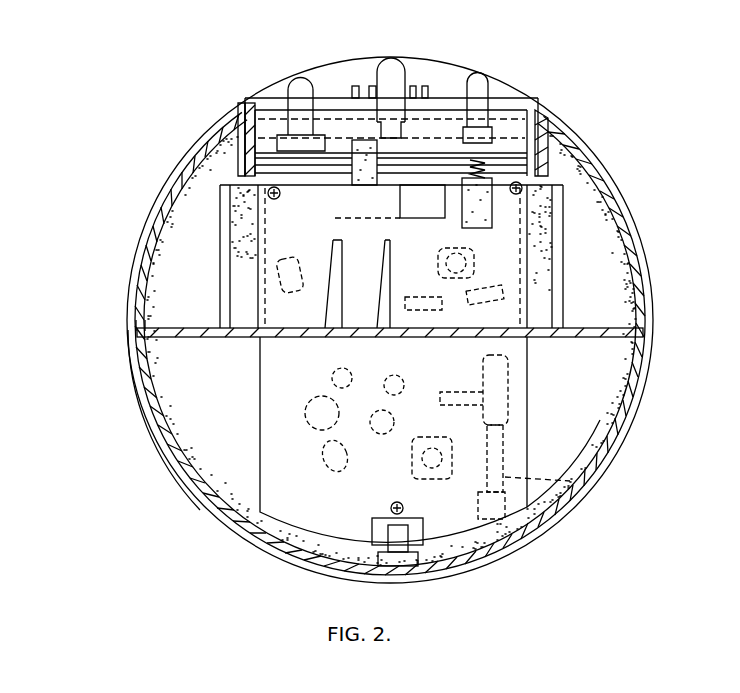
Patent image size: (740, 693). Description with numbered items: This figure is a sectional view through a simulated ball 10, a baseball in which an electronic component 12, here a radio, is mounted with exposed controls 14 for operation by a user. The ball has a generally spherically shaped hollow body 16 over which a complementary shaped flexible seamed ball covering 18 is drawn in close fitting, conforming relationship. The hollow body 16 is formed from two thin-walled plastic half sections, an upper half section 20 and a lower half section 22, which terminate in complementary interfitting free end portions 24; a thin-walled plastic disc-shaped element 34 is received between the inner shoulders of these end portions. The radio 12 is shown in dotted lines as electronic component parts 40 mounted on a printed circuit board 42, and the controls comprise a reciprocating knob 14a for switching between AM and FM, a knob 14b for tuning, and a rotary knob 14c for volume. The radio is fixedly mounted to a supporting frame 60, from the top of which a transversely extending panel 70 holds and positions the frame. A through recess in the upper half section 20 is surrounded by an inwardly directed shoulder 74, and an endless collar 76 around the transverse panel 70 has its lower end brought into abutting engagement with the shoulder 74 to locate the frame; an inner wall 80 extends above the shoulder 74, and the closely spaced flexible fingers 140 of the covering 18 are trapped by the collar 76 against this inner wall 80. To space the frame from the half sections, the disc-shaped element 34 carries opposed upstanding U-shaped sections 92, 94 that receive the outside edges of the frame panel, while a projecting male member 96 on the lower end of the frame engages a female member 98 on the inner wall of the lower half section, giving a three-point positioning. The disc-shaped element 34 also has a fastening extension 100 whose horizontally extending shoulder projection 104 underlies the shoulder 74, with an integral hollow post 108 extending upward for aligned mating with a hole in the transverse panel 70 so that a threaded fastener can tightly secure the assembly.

The simulated ball 10 is at (601, 133).
The electronic component 12 is at (450, 416).
The exposed controls 14 is at (480, 74).
The reciprocating electronic control knob 14a is at (488, 88).
The electronic control knob 14b is at (392, 59).
The rotary electronic control knob 14c is at (298, 89).
The hollow body 16 is at (624, 192).
The flexible seamed ball covering 18 is at (634, 216).
The upper thin-walled plastic half section 20 is at (152, 225).
The lower thin-walled plastic half section 22 is at (153, 432).
The complementary interfitting free end portions 24 is at (123, 342).
The disc-shaped element 34 is at (200, 342).
The electronic component parts 40 is at (572, 481).
The printed circuit board 42 is at (530, 498).
The supporting frame 60 is at (258, 477).
The transversely extending panel 70 is at (265, 93).
The shoulder 74 is at (247, 207).
The endless collar 76 is at (250, 150).
The inner wall 80 is at (236, 110).
The U-shaped section 92 is at (542, 300).
The U-shaped section 94 is at (242, 277).
The projecting male member 96 is at (394, 543).
The female member 98 is at (417, 563).
The fastening extension 100 is at (368, 242).
The horizontally extending shoulder projection 104 is at (392, 255).
The integral post 108 is at (350, 165).
The flexible fingers 140 is at (553, 112).